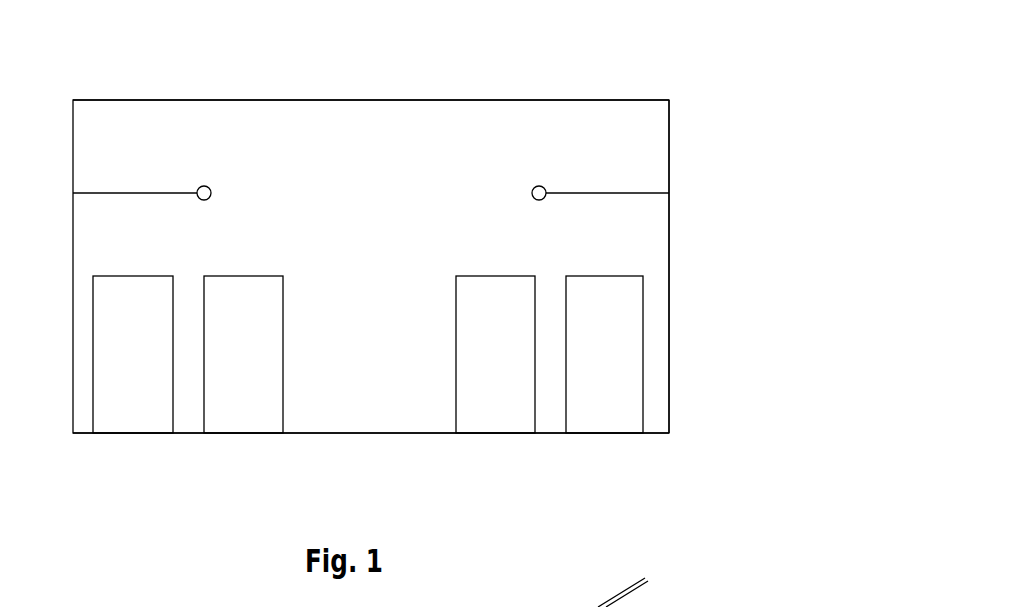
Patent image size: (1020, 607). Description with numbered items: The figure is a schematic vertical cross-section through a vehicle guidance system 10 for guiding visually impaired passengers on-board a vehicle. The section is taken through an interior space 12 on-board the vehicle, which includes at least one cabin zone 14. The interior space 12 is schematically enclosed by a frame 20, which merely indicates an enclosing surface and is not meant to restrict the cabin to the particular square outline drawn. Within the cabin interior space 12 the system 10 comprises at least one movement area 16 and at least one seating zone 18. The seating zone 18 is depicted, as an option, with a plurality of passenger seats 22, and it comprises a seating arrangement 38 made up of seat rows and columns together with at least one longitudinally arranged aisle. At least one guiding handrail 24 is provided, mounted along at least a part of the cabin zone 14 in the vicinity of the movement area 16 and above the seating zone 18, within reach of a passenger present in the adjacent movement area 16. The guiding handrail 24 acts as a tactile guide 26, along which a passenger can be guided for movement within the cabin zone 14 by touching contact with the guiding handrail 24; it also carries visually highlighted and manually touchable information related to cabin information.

The vehicle guidance system 10 is at (566, 81).
The interior space 12 is at (376, 202).
The cabin zone 14 is at (440, 150).
The movement area 16 is at (376, 399).
The seating zone 18 is at (532, 453).
The frame 20 is at (670, 366).
The passenger seats 22 is at (644, 302).
The guiding handrail 24 is at (211, 182).
The tactile guide 26 is at (206, 200).
The seating arrangement 38 is at (628, 244).